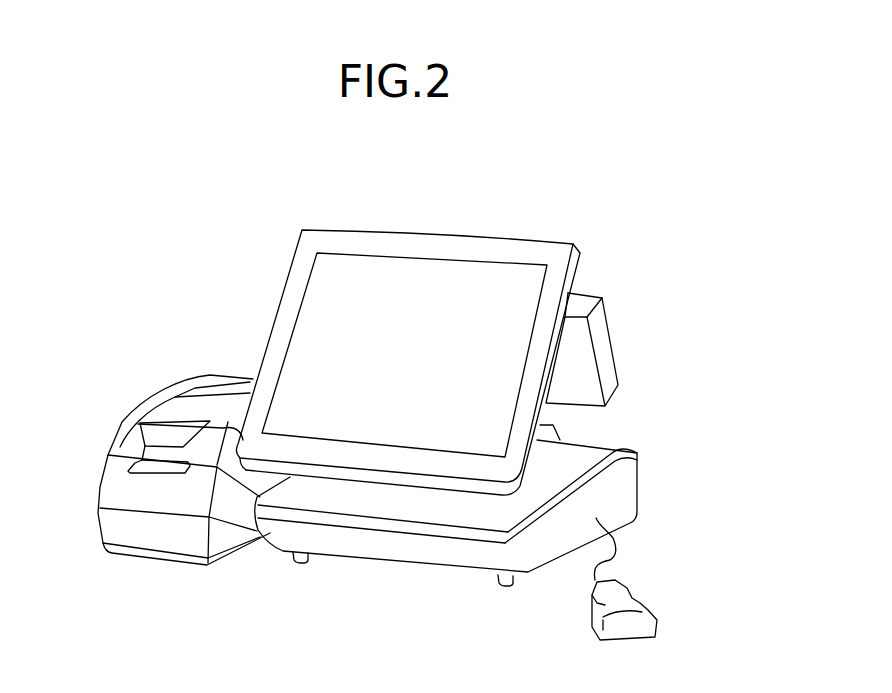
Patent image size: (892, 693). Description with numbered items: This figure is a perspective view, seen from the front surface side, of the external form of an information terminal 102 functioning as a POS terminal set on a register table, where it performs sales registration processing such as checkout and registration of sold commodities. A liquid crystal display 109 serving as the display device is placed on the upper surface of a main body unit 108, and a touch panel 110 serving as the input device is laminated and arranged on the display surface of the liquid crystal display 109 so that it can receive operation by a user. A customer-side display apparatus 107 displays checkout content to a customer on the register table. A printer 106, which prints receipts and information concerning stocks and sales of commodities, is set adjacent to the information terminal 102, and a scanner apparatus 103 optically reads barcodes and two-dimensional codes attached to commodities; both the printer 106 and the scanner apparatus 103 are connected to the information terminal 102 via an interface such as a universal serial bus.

The information terminal 102 is at (244, 197).
The scanner apparatus 103 is at (657, 617).
The printer 106 is at (143, 498).
The customer-side display apparatus 107 is at (602, 360).
The main body unit 108 is at (562, 473).
The liquid crystal display 109 is at (493, 250).
The touch panel 110 is at (352, 290).